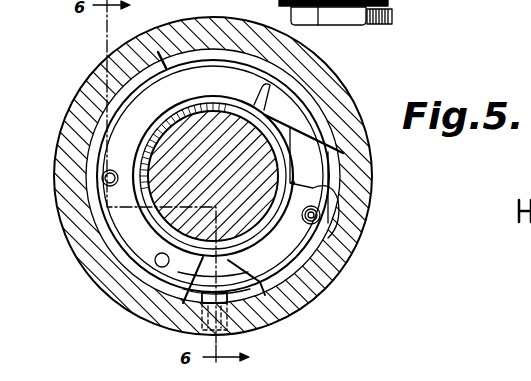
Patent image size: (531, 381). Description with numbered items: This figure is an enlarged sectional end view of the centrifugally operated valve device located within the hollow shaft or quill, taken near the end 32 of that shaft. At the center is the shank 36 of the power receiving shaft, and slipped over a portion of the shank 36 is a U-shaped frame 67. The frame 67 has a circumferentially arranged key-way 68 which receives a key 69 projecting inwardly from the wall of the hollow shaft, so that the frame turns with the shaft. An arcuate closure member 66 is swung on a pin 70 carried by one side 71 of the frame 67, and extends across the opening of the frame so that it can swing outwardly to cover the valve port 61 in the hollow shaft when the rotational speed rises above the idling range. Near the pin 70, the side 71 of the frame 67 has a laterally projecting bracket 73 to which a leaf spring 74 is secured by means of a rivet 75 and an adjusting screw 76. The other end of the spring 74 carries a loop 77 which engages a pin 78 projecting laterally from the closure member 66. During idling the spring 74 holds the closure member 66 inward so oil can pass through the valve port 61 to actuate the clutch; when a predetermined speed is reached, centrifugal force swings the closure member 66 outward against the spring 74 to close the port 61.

The end of hollow shaft 32 is at (62, 122).
The shank 36 is at (243, 143).
The valve port 61 is at (228, 336).
The closure member 66 is at (318, 248).
The U-shaped frame 67 is at (143, 99).
The key-way 68 is at (160, 48).
The key 69 is at (147, 42).
The pin 70 is at (110, 178).
The side of frame 71 is at (153, 285).
The bracket 73 is at (247, 273).
The leaf spring 74 is at (325, 130).
The rivet 75 is at (255, 300).
The adjusting screw 76 is at (188, 321).
The loop 77 is at (317, 192).
The pin 78 is at (318, 223).